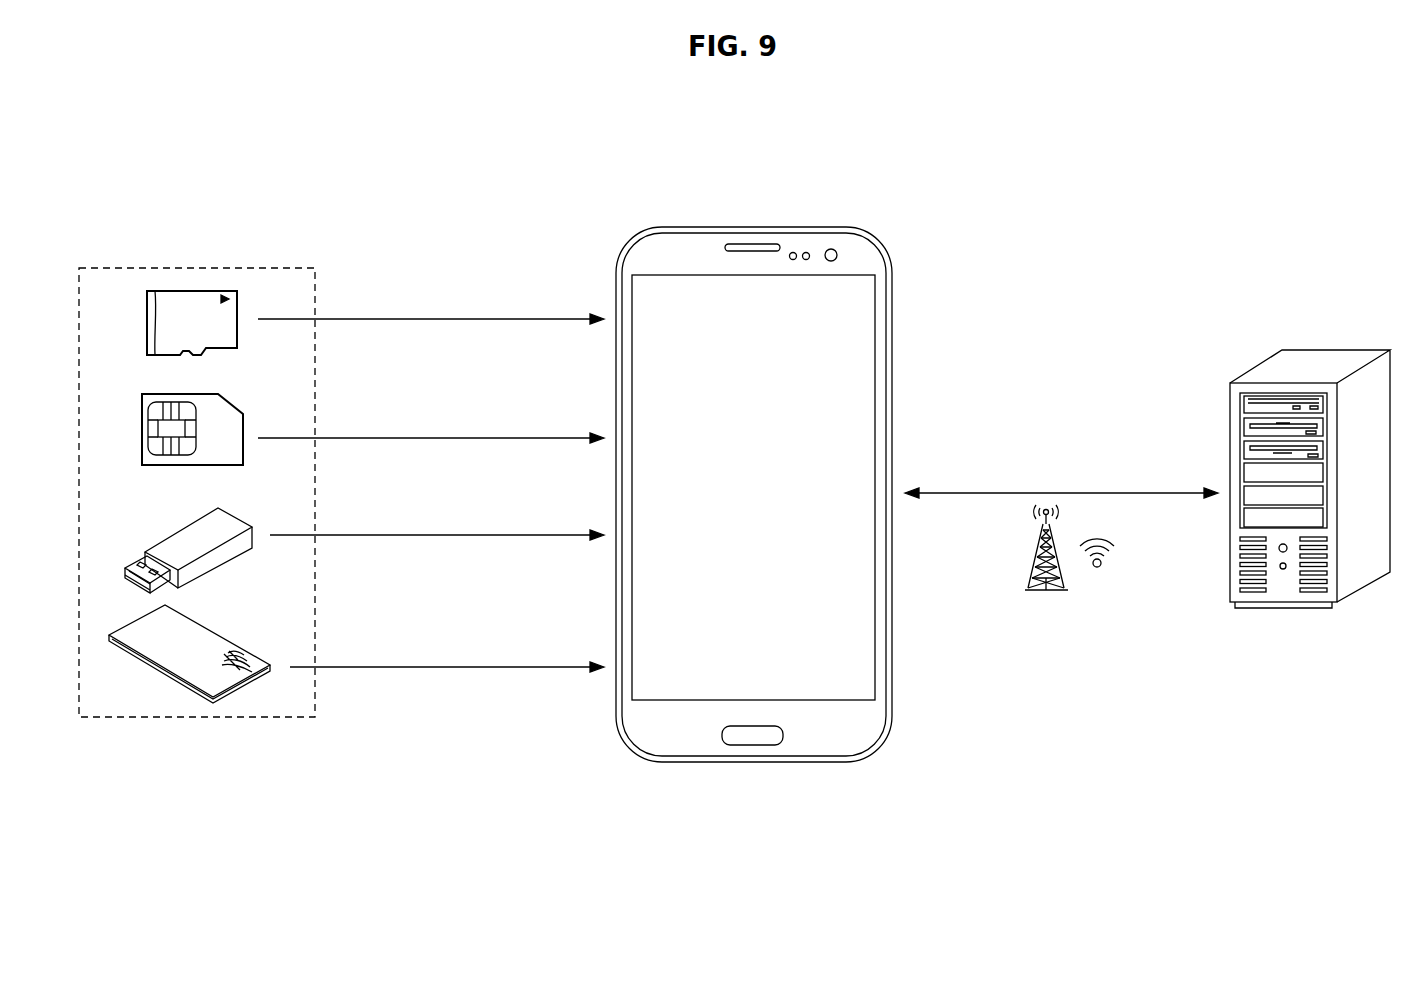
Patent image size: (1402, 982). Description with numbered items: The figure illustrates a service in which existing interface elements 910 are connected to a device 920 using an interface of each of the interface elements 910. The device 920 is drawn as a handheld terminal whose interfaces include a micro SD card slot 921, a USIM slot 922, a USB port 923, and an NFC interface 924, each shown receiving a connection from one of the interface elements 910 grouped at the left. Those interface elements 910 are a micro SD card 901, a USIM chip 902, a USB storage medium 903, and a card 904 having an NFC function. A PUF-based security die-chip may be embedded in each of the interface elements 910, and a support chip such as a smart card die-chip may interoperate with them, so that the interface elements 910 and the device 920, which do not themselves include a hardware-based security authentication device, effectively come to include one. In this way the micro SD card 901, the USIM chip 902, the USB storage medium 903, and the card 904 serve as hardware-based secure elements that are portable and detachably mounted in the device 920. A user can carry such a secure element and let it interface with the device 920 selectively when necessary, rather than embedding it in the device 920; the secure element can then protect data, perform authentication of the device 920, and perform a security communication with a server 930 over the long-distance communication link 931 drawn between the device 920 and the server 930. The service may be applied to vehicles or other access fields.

The interface elements 910 is at (196, 268).
The micro SD card 901 is at (147, 322).
The USIM chip 902 is at (142, 430).
The USB storage medium 903 is at (182, 532).
The card having an NFC function 904 is at (218, 631).
The device 920 is at (750, 227).
The micro SD card slot 921 is at (443, 282).
The USIM slot 922 is at (443, 400).
The USB port 923 is at (443, 496).
The NFC interface 924 is at (443, 627).
The server 930 is at (1335, 349).
The long distance communication network 931 is at (1125, 552).